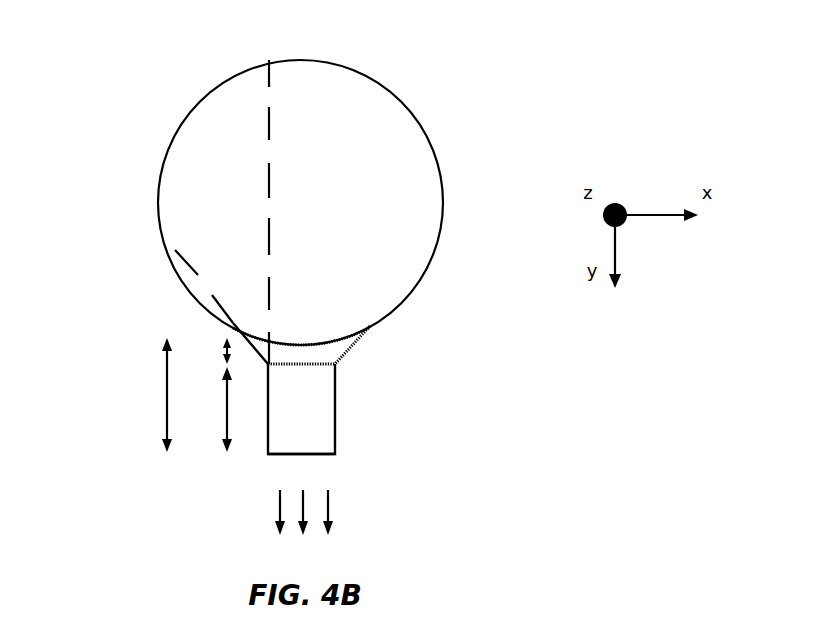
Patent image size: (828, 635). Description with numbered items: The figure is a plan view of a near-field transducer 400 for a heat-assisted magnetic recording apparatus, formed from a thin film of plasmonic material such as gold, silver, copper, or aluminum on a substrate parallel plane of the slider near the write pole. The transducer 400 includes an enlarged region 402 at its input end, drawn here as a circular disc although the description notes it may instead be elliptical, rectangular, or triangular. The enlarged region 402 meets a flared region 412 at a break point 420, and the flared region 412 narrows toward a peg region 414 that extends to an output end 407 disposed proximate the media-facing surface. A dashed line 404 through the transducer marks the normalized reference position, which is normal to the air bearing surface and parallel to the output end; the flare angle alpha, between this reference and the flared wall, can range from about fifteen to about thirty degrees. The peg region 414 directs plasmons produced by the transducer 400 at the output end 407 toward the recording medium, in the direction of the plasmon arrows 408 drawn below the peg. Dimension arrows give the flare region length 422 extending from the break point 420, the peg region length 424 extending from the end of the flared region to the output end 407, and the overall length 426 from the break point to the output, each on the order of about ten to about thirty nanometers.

The near-field transducer 400 is at (138, 67).
The enlarged region 402 is at (294, 212).
The dashed line 404 is at (269, 140).
The output end 407 is at (275, 455).
The plasmon arrows 408 is at (340, 512).
The flared region 412 is at (300, 358).
The peg region 414 is at (313, 398).
The break point 420 is at (303, 343).
The flare region length 422 is at (206, 351).
The peg region length 424 is at (209, 409).
The peg length 426 is at (143, 395).